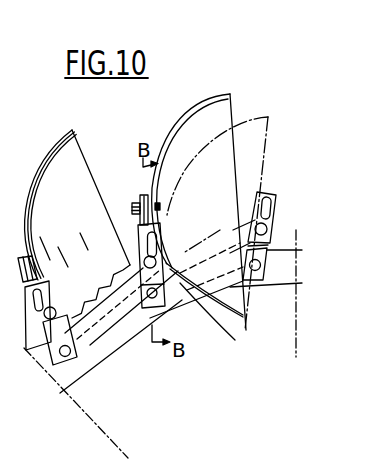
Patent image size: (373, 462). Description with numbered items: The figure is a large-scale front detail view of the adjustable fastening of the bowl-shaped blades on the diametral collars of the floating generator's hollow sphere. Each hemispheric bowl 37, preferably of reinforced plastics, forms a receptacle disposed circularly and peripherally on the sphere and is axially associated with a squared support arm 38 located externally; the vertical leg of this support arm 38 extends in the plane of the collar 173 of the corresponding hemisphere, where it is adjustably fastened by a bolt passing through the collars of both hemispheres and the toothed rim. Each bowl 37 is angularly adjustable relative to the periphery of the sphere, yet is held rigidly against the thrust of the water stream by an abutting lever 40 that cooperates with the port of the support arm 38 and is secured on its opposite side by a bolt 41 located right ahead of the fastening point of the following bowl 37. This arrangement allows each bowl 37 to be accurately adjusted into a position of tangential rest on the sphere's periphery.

The hemispheric bowl 37 is at (67, 152).
The squared support arm 38 is at (165, 292).
The abutting lever 40 is at (125, 283).
The bolt 41 is at (70, 367).
The collar 173 is at (128, 320).